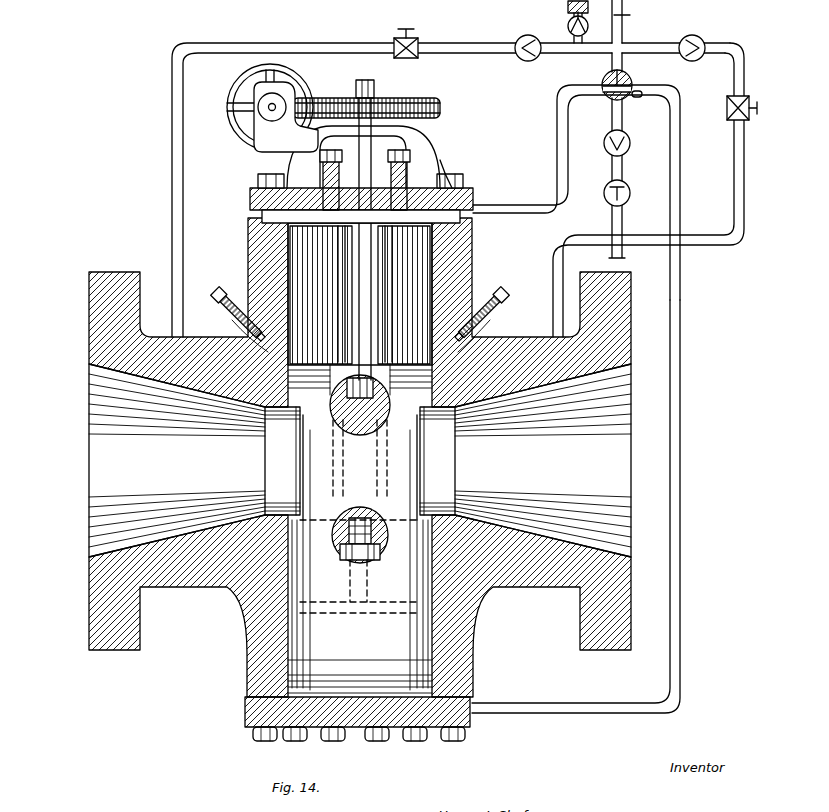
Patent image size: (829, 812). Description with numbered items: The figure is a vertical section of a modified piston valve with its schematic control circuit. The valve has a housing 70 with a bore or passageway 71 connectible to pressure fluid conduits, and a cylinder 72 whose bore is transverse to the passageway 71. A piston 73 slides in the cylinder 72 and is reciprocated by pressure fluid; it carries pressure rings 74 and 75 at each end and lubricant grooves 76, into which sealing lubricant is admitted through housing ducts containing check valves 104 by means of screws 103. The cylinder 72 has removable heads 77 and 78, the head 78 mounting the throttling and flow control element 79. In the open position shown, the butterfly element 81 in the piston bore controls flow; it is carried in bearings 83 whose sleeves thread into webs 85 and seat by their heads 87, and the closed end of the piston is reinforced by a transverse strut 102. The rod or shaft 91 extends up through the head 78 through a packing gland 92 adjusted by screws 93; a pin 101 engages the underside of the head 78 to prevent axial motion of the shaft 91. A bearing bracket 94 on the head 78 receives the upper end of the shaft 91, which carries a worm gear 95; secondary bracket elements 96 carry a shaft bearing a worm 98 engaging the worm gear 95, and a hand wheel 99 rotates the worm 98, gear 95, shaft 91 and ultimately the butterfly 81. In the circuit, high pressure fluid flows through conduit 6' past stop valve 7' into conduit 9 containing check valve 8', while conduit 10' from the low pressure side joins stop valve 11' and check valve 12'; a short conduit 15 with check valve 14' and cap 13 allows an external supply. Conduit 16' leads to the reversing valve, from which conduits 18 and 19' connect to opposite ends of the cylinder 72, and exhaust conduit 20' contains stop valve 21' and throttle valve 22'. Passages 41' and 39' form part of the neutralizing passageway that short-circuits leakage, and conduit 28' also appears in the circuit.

The housing 70 is at (625, 612).
The bore or passageway 71 is at (615, 463).
The cylinder 72 is at (455, 243).
The piston 73 is at (262, 668).
The pressure ring 74 is at (262, 698).
The pressure ring 75 is at (440, 676).
The lubricant grooves 76 is at (428, 630).
The removable head 77 is at (408, 740).
The removable head 78 is at (478, 200).
The throttling and flow control element 79 is at (440, 152).
The throttle and flow control element 81 is at (424, 466).
The bearings 83 is at (377, 420).
The webs 85 is at (338, 385).
The head 87 is at (372, 380).
The rod or shaft 91 is at (372, 304).
The packing gland 92 is at (408, 172).
The screws 93 is at (326, 185).
The bearing bracket 94 is at (424, 142).
The worm gear 95 is at (408, 98).
The secondary bracket elements 96 is at (268, 133).
The worm 98 is at (258, 109).
The hand wheel 99 is at (292, 82).
The dowel or pin 101 is at (372, 210).
The transverse strut 102 is at (358, 616).
The screws 103 is at (216, 292).
The check valves 104 is at (236, 343).
The conduit 10' is at (376, 190).
The stop valve 11' is at (387, 38).
The check valve 12' is at (509, 40).
The cap or closure element 13 is at (590, 8).
The check valve 14' is at (597, 20).
The short conduit 15 is at (570, 28).
The pipe 28' is at (638, 21).
The conduit 9 is at (658, 46).
The stop valve 7' is at (704, 35).
The check valve 8' is at (744, 92).
The conduit 16' is at (632, 62).
The passage 41' is at (605, 81).
The passageway 39' is at (645, 102).
The conduit 18 is at (557, 150).
The conduit 20' is at (605, 178).
The stop valve 21' is at (632, 142).
The throttle valve 22' is at (632, 192).
The conduit 6' is at (648, 190).
The conduit 19' is at (598, 506).